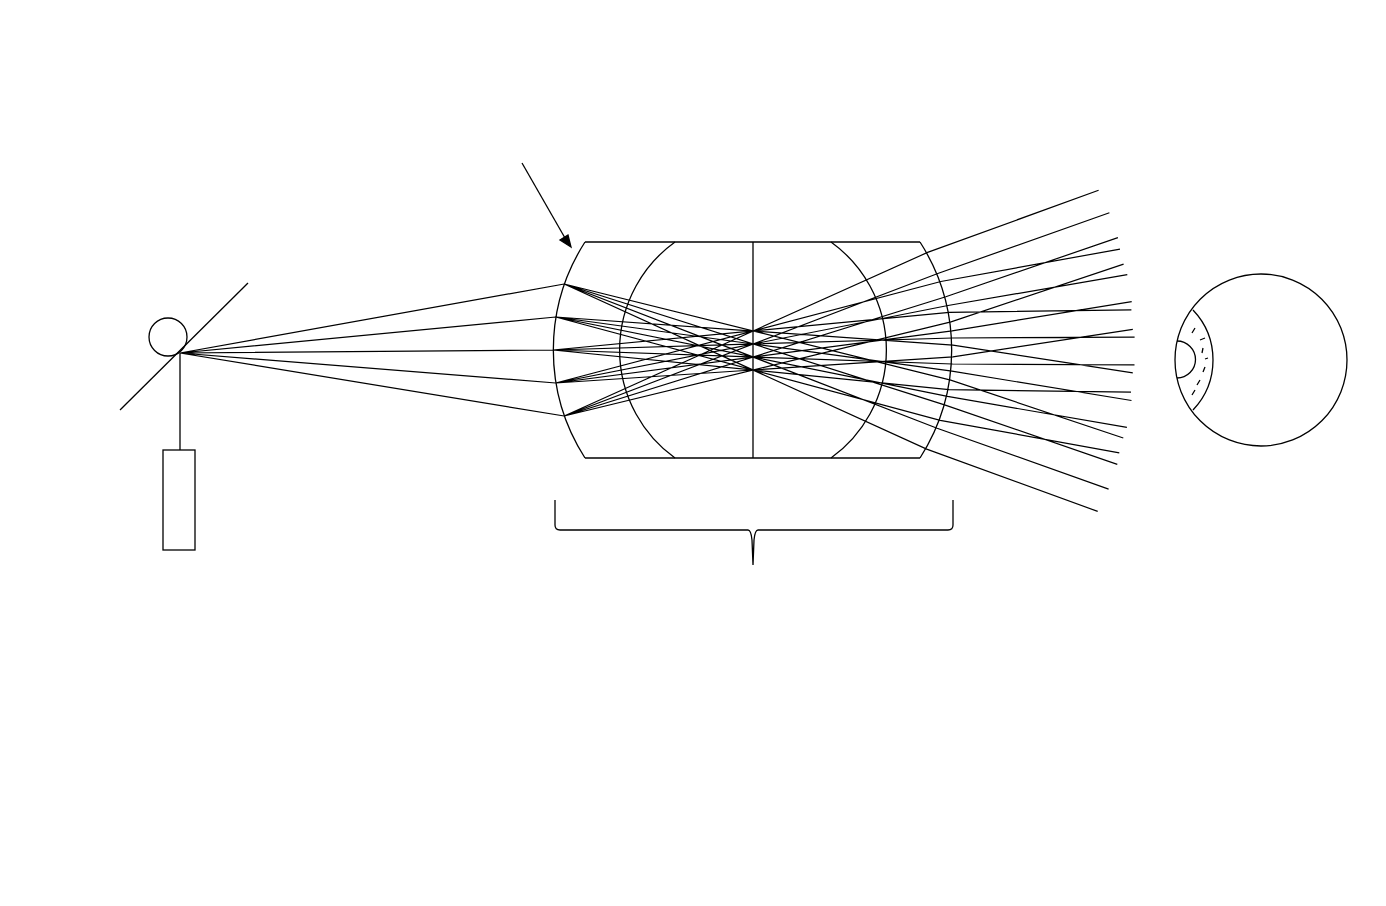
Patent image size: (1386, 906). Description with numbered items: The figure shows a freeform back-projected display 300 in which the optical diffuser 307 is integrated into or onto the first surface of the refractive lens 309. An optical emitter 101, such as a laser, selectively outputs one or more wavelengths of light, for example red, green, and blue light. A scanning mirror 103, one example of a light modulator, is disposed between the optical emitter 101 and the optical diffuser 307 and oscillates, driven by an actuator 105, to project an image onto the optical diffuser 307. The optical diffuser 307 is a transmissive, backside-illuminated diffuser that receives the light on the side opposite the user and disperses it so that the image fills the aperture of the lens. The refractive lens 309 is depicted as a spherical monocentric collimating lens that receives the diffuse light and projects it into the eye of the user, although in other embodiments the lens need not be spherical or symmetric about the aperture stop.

The freeform back-projected display 300 is at (775, 48).
The optical emitter 101 is at (180, 536).
The scanning mirror 103 is at (229, 300).
The actuator 105 is at (163, 335).
The optical diffuser 307 is at (574, 440).
The refractive lens 309 is at (644, 257).